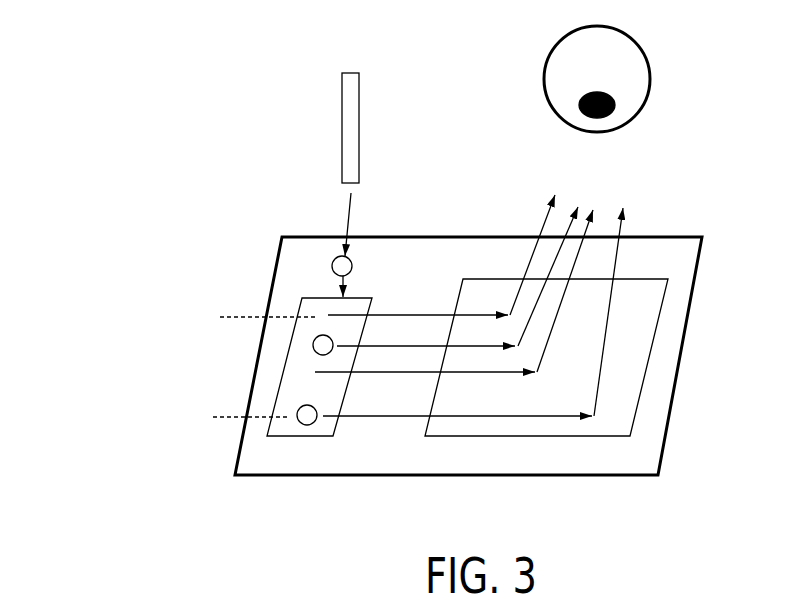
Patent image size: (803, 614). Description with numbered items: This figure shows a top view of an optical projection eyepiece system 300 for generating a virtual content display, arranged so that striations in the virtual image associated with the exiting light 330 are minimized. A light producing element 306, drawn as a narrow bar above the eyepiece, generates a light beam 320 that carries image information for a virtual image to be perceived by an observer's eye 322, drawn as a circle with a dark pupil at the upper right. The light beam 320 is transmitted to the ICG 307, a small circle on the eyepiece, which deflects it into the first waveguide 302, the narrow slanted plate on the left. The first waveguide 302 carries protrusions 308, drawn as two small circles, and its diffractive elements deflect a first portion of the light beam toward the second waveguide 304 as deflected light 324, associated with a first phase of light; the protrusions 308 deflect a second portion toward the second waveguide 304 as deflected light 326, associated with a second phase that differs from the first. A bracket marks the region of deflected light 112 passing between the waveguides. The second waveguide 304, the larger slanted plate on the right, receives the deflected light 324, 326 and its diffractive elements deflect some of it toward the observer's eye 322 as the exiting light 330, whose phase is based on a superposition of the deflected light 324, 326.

The optical projection eyepiece system 300 is at (120, 152).
The light producing element 306 is at (335, 102).
The light beam 320 is at (317, 224).
The ICG 307 is at (331, 267).
The first waveguide 302 is at (290, 440).
The protrusions 308 is at (307, 346).
The deflected light 112 is at (200, 317).
The deflected light 324 is at (434, 310).
The deflected light 326 is at (428, 340).
The second waveguide 304 is at (638, 412).
The exiting light 330 is at (628, 200).
The observer's eye(s) 322 is at (538, 68).